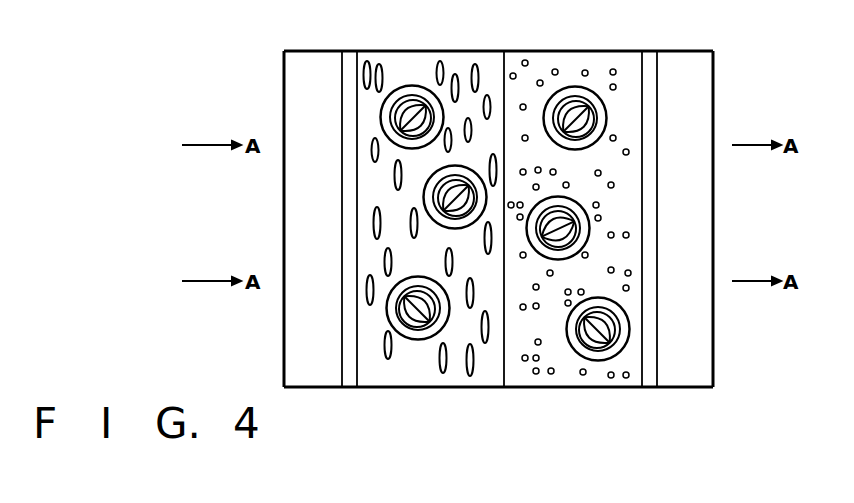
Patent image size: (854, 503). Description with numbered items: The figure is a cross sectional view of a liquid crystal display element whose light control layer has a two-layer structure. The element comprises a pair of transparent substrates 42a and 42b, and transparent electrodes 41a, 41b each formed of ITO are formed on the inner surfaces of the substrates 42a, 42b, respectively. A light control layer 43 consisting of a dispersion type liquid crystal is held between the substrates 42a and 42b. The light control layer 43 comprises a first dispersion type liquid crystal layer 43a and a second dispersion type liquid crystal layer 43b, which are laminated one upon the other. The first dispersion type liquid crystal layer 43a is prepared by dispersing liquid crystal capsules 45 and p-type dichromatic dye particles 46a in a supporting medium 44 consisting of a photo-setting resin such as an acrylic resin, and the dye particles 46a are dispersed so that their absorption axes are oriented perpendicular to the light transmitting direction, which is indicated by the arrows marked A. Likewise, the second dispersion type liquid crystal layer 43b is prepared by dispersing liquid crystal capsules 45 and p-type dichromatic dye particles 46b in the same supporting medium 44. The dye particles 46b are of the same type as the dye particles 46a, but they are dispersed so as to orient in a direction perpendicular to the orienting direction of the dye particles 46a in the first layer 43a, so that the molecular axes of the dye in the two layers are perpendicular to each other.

The transparent electrode 41a is at (349, 387).
The transparent electrode 41b is at (647, 383).
The transparent substrate 42a is at (305, 382).
The transparent substrate 42b is at (688, 382).
The light control layer 43 is at (498, 256).
The first dispersion type liquid crystal layer 43a is at (436, 233).
The second dispersion type liquid crystal layer 43b is at (569, 238).
The supporting medium 44 is at (398, 62).
The liquid crystal capsules 45 is at (411, 95).
The p-type dichromatic dye particles 46a is at (478, 70).
The p-type dichromatic dye particles 46b is at (527, 62).